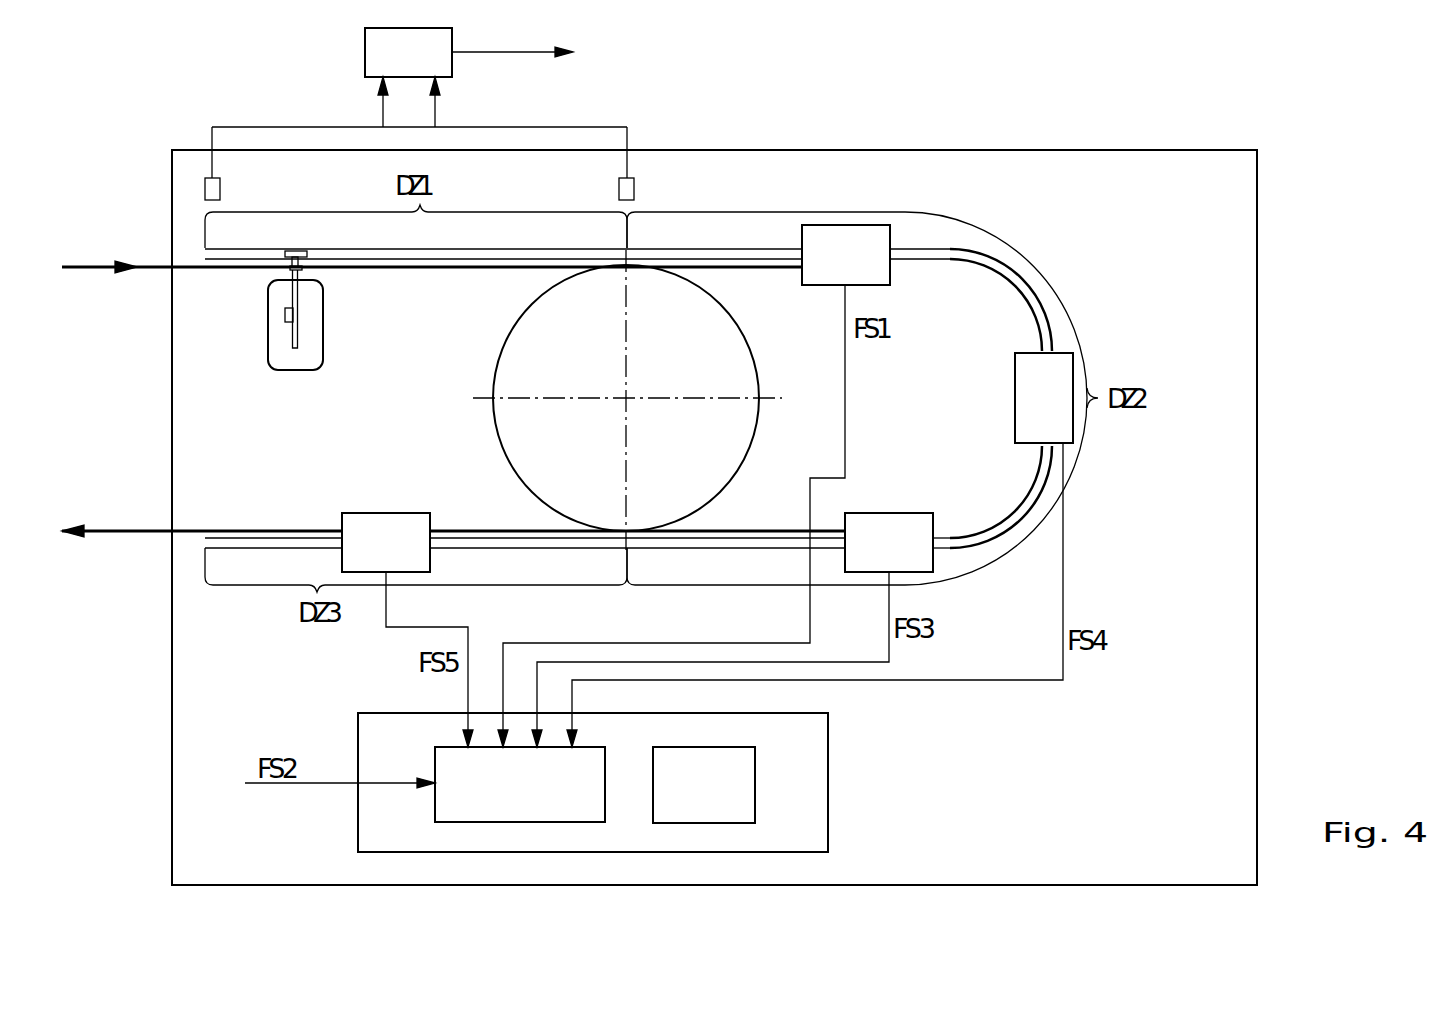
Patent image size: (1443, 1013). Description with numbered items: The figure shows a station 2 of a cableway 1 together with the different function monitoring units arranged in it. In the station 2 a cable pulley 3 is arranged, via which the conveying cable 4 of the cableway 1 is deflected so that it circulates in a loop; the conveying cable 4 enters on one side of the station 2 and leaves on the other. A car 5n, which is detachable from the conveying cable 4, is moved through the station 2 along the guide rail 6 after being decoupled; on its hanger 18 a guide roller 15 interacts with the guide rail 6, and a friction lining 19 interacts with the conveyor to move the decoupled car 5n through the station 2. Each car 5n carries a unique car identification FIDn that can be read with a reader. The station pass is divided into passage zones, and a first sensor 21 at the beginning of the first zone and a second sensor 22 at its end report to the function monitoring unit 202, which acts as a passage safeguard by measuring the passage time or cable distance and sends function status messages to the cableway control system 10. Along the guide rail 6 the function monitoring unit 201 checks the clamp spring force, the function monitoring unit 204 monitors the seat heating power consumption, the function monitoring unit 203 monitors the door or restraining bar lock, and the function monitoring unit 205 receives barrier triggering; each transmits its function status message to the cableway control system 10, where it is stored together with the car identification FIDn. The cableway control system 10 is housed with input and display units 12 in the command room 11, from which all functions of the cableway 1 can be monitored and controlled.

The cableway 1 is at (112, 143).
The station 2 is at (172, 757).
The cable pulley 3 is at (670, 450).
The conveying cable 4 is at (90, 262).
The car 5n is at (285, 360).
The guide rail 6 is at (742, 247).
The cableway control system 10 is at (525, 790).
The command room 11 is at (828, 758).
The input and display units 12 is at (723, 790).
The guide roller 15 is at (313, 257).
The hanger 18 is at (298, 337).
The friction lining 19 is at (317, 267).
The first sensor 21 is at (205, 178).
The second sensor 22 is at (637, 187).
The function monitoring unit 201 is at (860, 225).
The function monitoring unit 202 is at (437, 65).
The function monitoring unit 203 is at (890, 513).
The function monitoring unit 204 is at (1015, 400).
The function monitoring unit 205 is at (383, 513).
The car identification FIDn is at (285, 315).